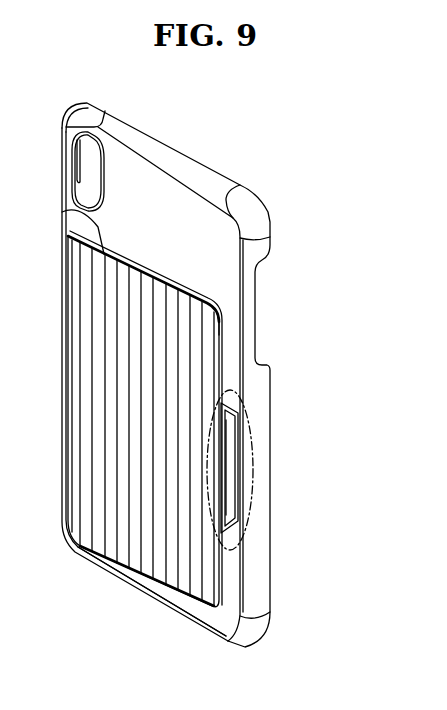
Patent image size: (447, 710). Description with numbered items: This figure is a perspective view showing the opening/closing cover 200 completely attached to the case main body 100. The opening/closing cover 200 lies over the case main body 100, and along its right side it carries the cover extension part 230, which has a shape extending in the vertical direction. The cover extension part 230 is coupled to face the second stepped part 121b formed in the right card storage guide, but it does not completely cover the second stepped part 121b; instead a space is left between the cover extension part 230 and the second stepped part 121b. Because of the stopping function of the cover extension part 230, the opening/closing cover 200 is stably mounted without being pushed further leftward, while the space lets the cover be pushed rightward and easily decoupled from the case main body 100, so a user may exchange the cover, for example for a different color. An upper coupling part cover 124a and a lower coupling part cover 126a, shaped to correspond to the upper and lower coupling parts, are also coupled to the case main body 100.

The case main body 100 is at (161, 196).
The upper coupling part cover 124a is at (198, 316).
The opening/closing cover 200 is at (183, 377).
The second stepped part 121b is at (250, 457).
The cover extension part 230 is at (220, 487).
The lower coupling part cover 126a is at (203, 623).